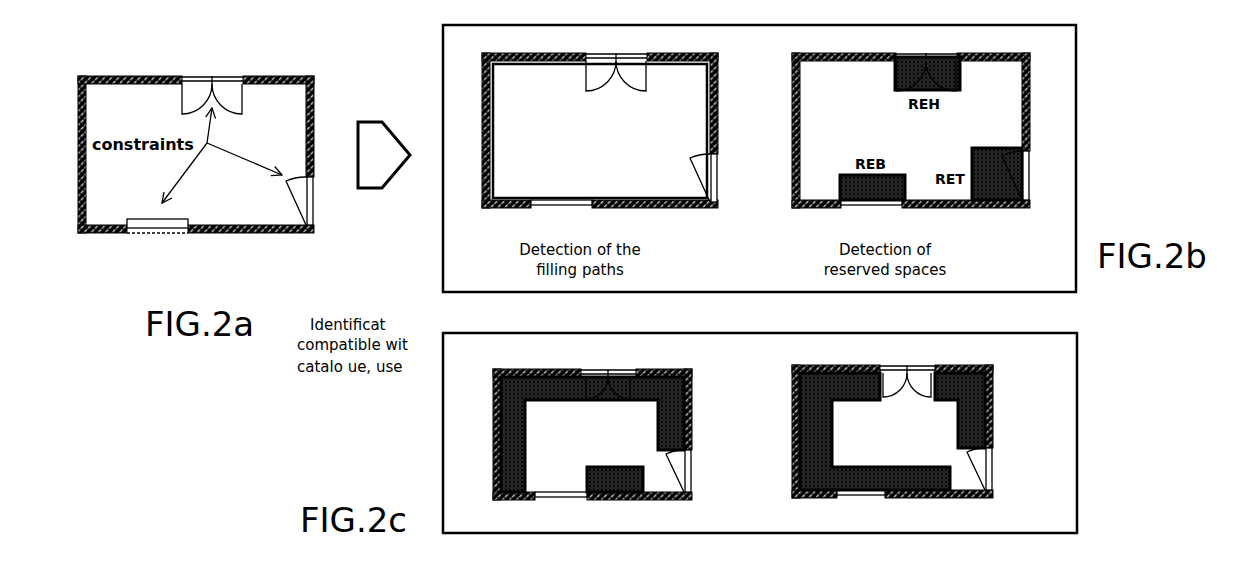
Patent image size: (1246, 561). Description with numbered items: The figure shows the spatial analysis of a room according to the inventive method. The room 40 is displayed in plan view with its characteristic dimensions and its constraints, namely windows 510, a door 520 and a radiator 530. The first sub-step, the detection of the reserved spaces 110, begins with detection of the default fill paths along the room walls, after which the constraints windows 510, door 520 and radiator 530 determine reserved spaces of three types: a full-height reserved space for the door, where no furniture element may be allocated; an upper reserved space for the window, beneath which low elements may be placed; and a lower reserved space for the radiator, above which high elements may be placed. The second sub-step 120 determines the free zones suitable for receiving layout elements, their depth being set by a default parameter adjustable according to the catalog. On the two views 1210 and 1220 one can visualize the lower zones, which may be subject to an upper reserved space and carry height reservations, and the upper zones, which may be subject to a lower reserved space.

In FIG. 2a, the room 40 is at (78, 184).
In FIG. 2a, the windows 510 is at (226, 47).
In FIG. 2a, the door 520 is at (340, 207).
In FIG. 2a, the radiator 530 is at (142, 253).
In FIG. 2b, the detection of the reserved spaces 110 is at (1076, 102).
In FIG. 2c, the second sub-step 120 is at (1079, 429).
In FIG. 2c, the view of lower zones 1210 is at (692, 396).
In FIG. 2c, the view of upper zones 1220 is at (993, 400).